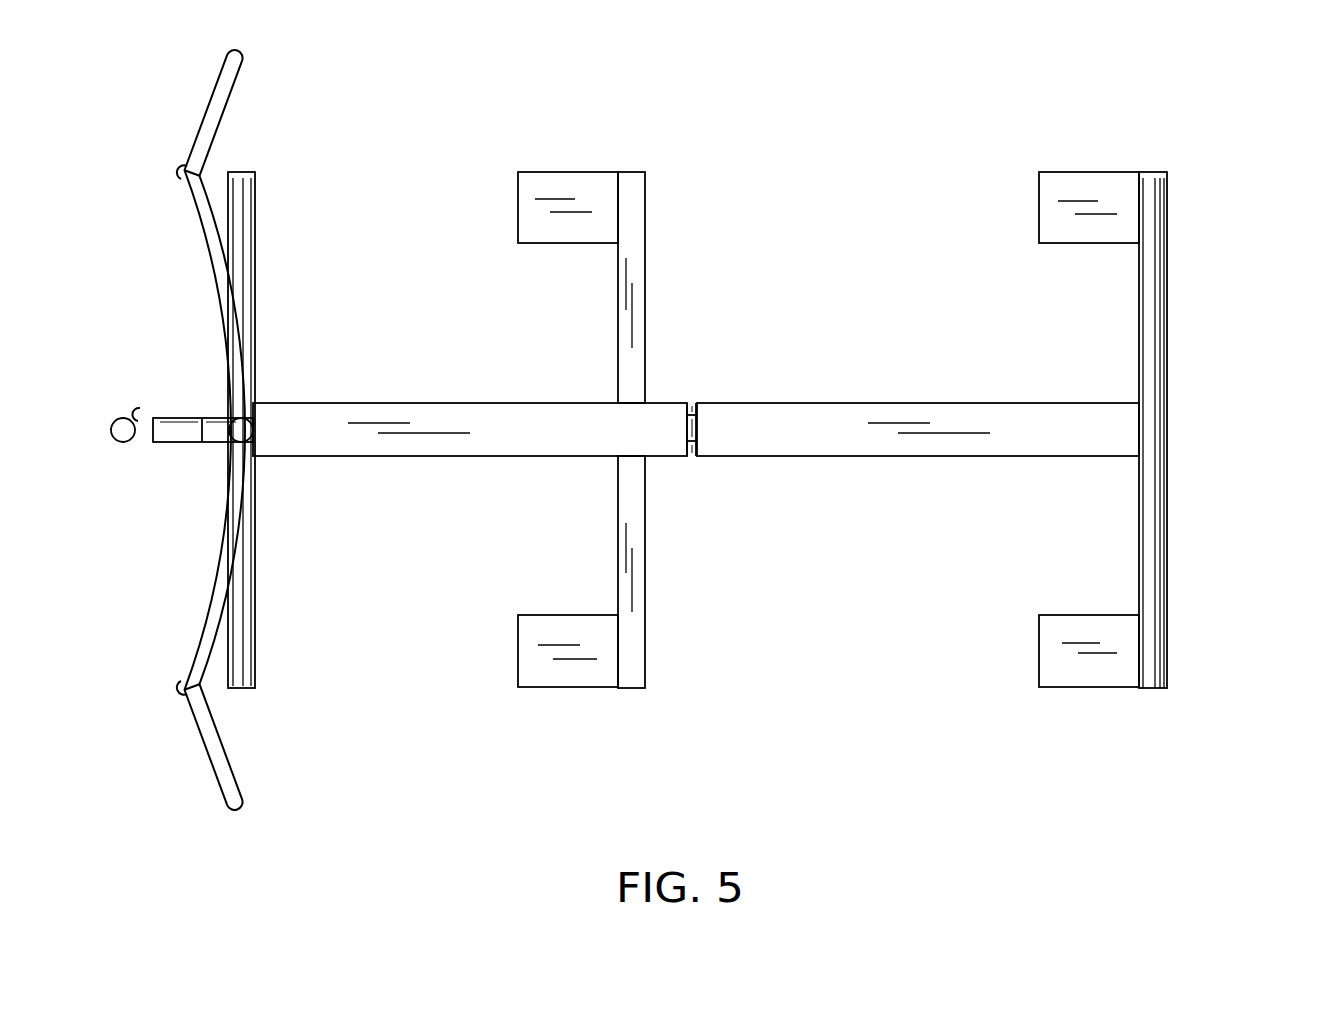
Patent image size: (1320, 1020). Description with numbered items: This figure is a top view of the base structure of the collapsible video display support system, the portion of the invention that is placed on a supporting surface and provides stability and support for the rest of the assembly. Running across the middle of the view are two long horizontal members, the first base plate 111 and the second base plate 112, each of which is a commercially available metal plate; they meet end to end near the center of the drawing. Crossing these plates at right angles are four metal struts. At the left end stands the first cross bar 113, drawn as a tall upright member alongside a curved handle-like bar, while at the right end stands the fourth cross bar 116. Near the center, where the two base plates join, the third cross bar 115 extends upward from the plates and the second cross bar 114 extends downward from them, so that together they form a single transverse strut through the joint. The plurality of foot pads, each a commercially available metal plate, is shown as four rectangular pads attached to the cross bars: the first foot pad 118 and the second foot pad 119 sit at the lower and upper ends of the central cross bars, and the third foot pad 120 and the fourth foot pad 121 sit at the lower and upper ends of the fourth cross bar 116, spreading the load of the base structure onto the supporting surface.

The first base plate 111 is at (430, 410).
The second base plate 112 is at (850, 410).
The first cross bar 113 is at (252, 528).
The second cross bar 114 is at (645, 568).
The third cross bar 115 is at (645, 277).
The fourth cross bar 116 is at (1157, 365).
The first foot pad 118 is at (552, 678).
The second foot pad 119 is at (565, 178).
The third foot pad 120 is at (1087, 681).
The fourth foot pad 121 is at (1085, 178).